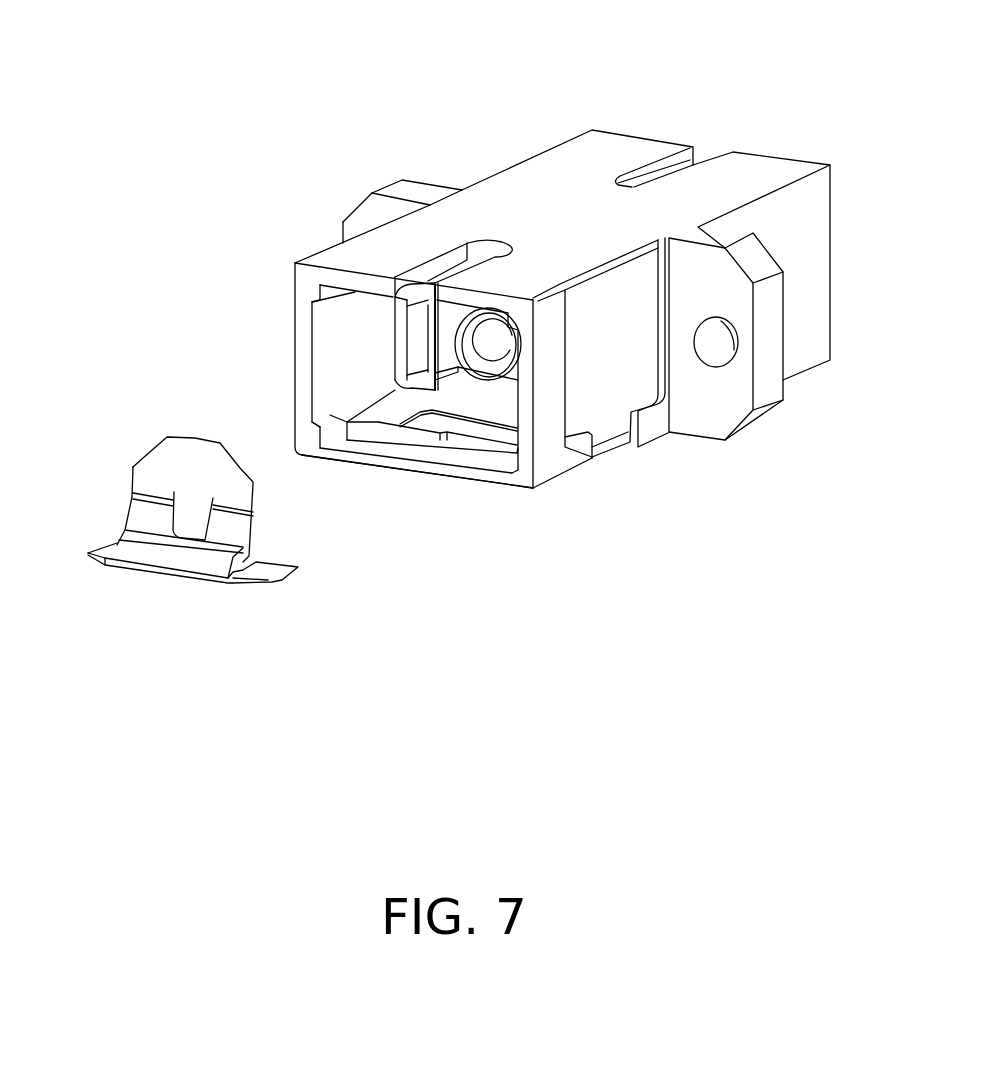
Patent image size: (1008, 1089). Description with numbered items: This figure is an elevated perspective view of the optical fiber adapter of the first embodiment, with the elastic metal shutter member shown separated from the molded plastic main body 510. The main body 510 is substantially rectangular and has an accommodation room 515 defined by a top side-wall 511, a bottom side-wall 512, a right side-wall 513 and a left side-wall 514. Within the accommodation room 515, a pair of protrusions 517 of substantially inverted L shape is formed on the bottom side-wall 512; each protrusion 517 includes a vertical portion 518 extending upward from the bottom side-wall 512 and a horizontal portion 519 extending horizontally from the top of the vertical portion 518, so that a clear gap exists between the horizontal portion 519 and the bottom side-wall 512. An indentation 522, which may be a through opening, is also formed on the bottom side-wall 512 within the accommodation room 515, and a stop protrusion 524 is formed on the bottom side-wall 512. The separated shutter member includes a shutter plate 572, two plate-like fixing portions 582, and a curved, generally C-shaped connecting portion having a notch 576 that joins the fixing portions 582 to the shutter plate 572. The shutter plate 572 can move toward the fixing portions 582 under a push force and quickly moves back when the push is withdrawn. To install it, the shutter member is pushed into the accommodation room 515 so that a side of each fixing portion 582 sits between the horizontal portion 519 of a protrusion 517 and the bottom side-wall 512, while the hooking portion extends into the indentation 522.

The main body 510 is at (818, 104).
The top side-wall 511 is at (526, 187).
The bottom side-wall 512 is at (367, 460).
The right side-wall 513 is at (557, 438).
The left side-wall 514 is at (305, 366).
The accommodation room 515 is at (483, 398).
The protrusions 517 is at (320, 437).
The vertical portion 518 is at (318, 437).
The horizontal portion 519 is at (336, 430).
The indentation 522 is at (455, 443).
The stop protrusion 524 is at (415, 430).
The shutter plate 572 is at (160, 466).
The notch 576 is at (232, 583).
The fixing portions 582 is at (270, 571).